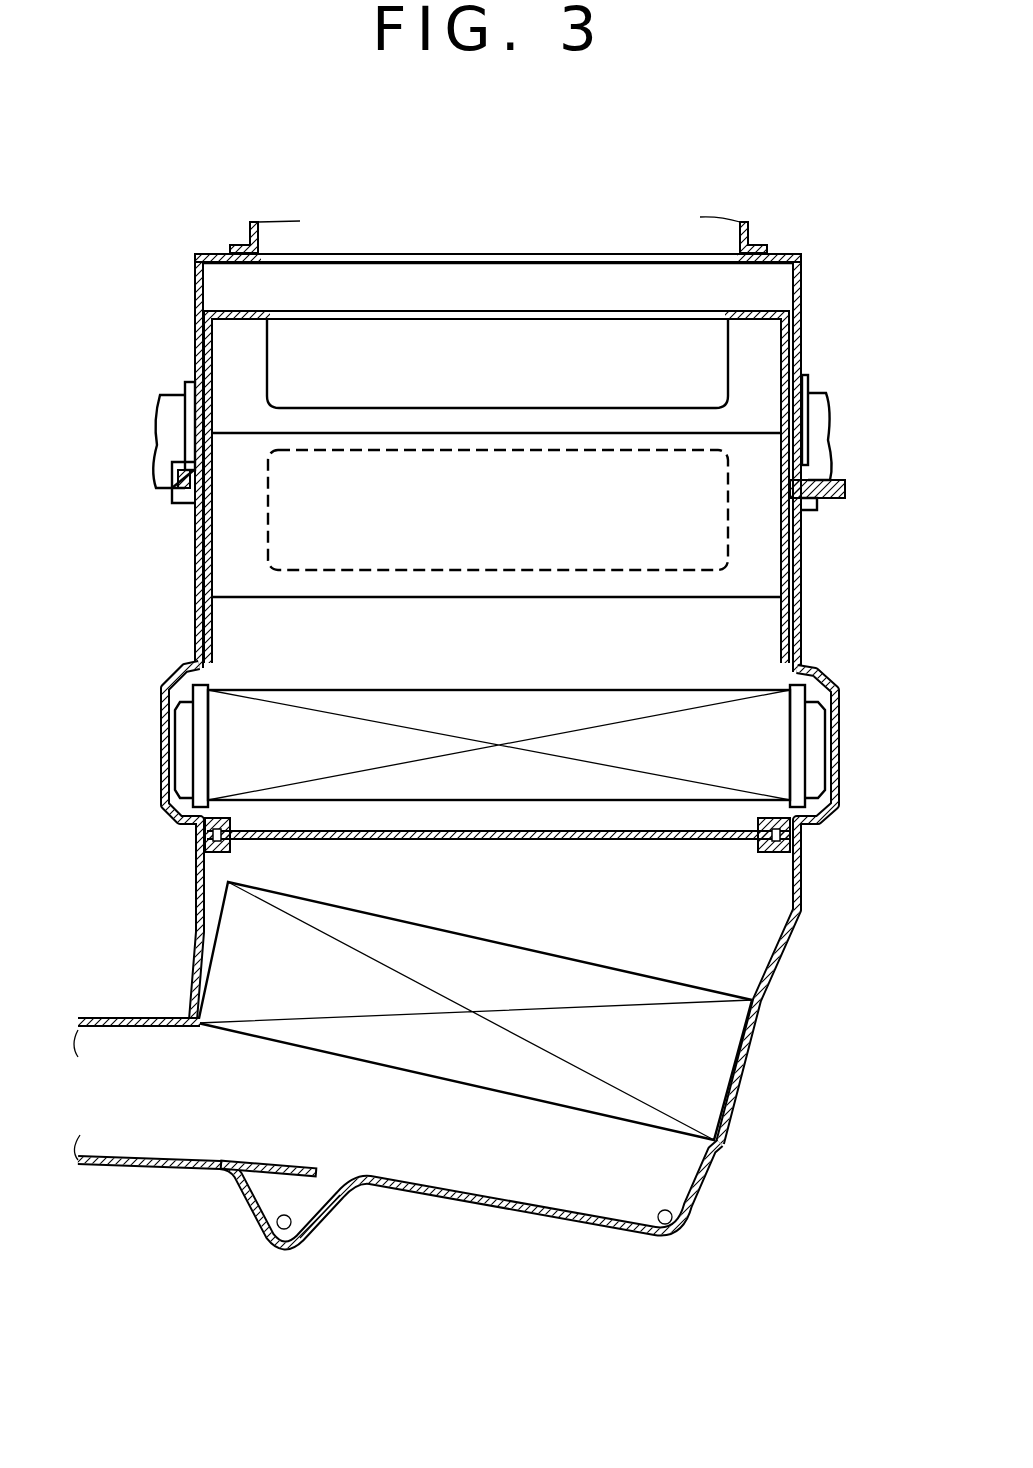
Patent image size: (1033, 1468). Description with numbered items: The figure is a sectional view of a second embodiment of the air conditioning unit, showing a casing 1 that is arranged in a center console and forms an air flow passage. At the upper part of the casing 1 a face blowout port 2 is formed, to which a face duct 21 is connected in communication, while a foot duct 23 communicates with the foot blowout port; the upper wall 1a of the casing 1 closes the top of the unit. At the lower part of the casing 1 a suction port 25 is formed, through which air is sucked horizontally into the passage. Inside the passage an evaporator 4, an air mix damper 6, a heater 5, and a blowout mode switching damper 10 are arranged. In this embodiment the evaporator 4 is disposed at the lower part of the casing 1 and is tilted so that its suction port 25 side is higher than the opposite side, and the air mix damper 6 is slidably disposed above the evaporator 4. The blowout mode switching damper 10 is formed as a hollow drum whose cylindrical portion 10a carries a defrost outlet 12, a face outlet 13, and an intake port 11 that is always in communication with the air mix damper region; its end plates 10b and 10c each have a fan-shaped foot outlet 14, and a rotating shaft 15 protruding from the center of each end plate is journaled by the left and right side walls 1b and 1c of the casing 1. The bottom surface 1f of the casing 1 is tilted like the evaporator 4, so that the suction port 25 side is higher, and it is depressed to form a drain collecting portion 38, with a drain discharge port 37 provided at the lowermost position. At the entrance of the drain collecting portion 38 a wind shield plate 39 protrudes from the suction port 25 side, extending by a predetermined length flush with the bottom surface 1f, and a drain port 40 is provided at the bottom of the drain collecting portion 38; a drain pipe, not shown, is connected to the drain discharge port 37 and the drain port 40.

The casing 1 is at (784, 240).
The upper wall of housing 1a is at (210, 253).
The left side wall 1b is at (200, 655).
The right side wall 1c is at (800, 905).
The bottom surface 1f is at (535, 1200).
The face blowout port 2 is at (541, 254).
The evaporator 4 is at (655, 977).
The heater 5 is at (735, 720).
The air mix damper 6 is at (700, 843).
The blowout mode switching damper 10 is at (504, 359).
The cylindrical portion 10a is at (213, 311).
The end plate 10b is at (205, 340).
The end plate 10c is at (786, 335).
The intake port 11 is at (433, 597).
The defrost outlet 12 is at (592, 545).
The face outlet 13 is at (401, 311).
The foot outlet 14 is at (205, 572).
The rotating shaft 15 is at (176, 482).
The face duct 21 is at (750, 228).
The foot duct 23 is at (150, 415).
The suction port 25 is at (130, 1053).
The drain discharge port 37 is at (677, 1230).
The drain collecting portion 38 is at (300, 1195).
The wind shield plate 39 is at (290, 1163).
The drain port 40 is at (280, 1229).